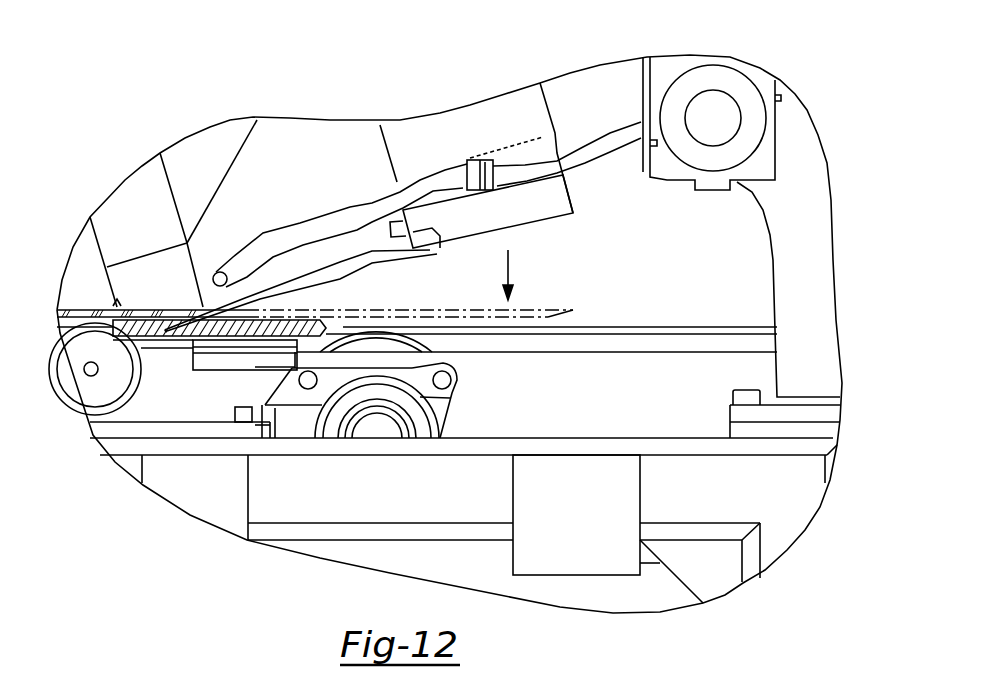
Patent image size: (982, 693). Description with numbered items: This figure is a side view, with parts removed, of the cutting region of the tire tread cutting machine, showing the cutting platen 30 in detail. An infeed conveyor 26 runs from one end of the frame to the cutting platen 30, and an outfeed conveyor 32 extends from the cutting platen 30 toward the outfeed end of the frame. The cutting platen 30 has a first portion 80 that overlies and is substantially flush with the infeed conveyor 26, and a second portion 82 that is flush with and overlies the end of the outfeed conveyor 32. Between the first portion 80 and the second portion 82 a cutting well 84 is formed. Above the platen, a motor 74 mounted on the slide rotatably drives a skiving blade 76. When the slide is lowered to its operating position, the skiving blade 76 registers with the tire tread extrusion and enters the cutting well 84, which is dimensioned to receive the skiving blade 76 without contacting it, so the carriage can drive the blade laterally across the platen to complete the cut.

The infeed conveyor 26 is at (83, 320).
The cutting platen 30 is at (165, 338).
The outfeed conveyor 32 is at (727, 337).
The motor 74 is at (470, 125).
The skiving blade 76 is at (347, 273).
The first portion 80 is at (147, 318).
The second portion 82 is at (233, 340).
The cutting well 84 is at (185, 325).